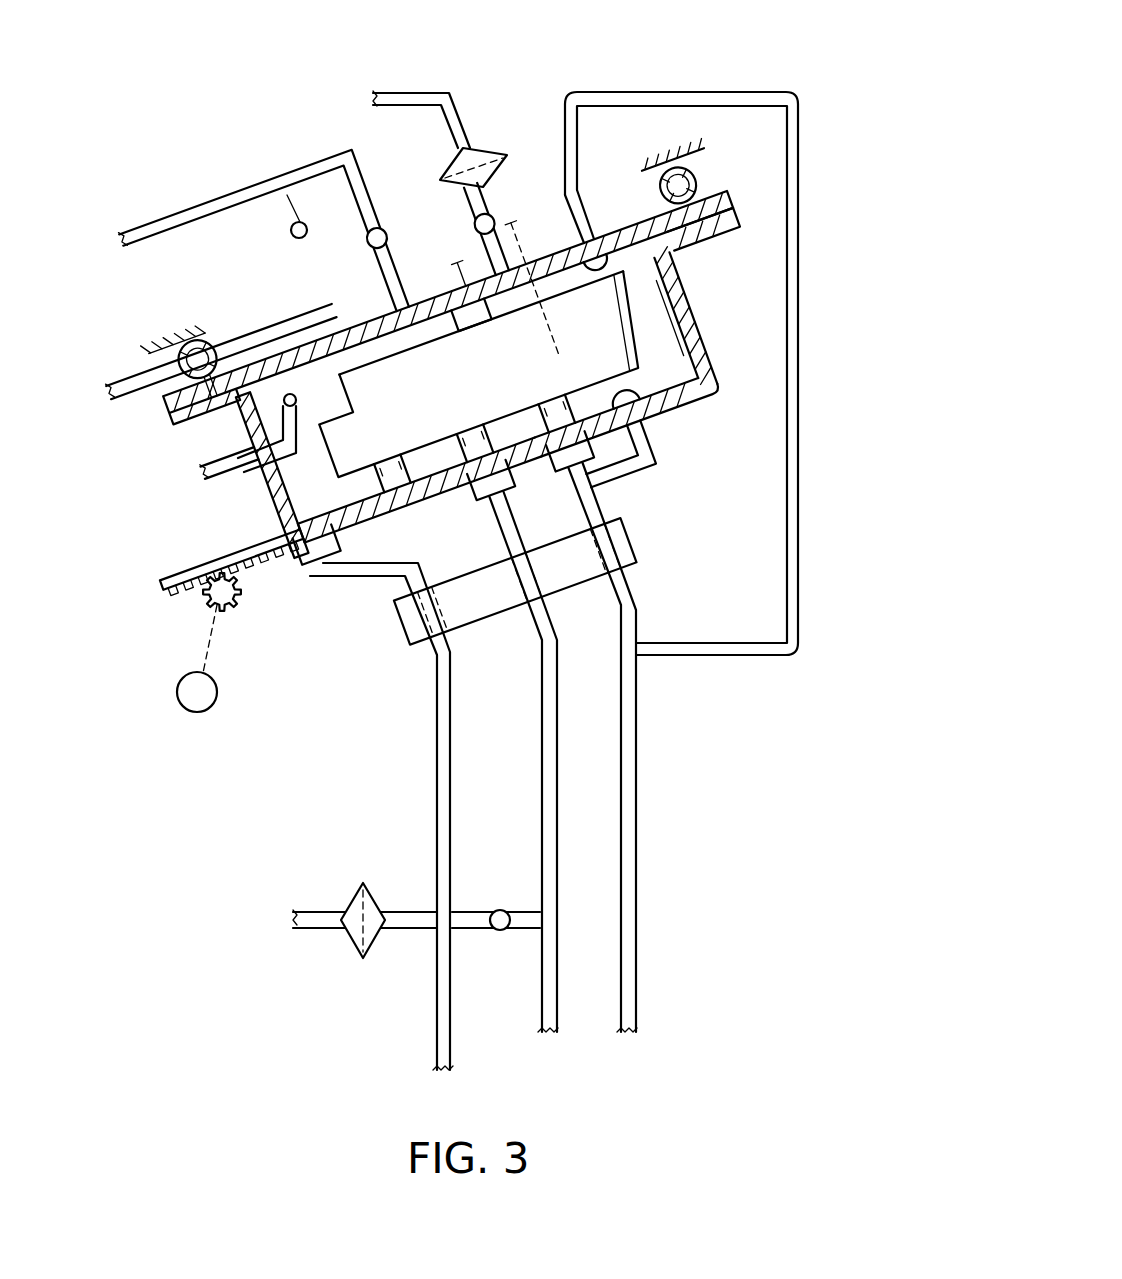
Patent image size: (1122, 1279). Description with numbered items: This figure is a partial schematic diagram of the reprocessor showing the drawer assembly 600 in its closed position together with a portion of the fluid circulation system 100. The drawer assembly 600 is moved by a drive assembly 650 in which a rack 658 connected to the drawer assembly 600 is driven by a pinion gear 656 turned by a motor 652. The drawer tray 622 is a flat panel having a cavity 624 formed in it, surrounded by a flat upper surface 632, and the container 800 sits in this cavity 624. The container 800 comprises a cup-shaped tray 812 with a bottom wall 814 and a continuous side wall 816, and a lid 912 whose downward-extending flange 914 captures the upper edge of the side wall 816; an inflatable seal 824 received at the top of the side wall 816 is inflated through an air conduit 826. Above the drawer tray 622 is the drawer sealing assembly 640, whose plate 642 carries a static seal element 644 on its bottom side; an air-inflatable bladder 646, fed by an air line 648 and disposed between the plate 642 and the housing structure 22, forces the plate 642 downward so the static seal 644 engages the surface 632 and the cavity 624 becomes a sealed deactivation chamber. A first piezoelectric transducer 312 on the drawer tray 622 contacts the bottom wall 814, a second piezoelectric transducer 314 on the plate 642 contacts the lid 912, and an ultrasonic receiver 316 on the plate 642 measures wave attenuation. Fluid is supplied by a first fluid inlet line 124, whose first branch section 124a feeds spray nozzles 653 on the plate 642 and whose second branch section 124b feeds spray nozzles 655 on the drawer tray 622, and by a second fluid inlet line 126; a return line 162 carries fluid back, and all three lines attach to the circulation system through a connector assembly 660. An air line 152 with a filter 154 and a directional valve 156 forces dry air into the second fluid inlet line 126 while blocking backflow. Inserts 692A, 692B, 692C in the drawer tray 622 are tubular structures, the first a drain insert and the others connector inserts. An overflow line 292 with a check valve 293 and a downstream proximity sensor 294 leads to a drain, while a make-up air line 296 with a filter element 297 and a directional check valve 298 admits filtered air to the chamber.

The housing structure 22 is at (672, 158).
The fluid circulation system 100 is at (312, 1040).
The first fluid inlet line 124 is at (637, 780).
The first branch section 124a is at (562, 130).
The second branch section 124b is at (615, 465).
The second fluid inlet line 126 is at (542, 797).
The air line 152 is at (407, 932).
The filter 154 is at (350, 940).
The directional valve 156 is at (498, 935).
The return line 162 is at (436, 748).
The overflow line 292 is at (247, 188).
The check valve 293 is at (387, 227).
The proximity sensor 294 is at (290, 232).
The make-up air line 296 is at (428, 91).
The filter element 297 is at (478, 150).
The directional check valve 298 is at (475, 222).
The first piezoelectric transducer 312 is at (425, 500).
The second piezoelectric transducer 314 is at (477, 312).
The ultrasonic receiver 316 is at (548, 293).
The drawer assembly 600 is at (273, 522).
The drawer tray 622 is at (700, 323).
The cavity 624 is at (688, 378).
The flat upper surface 632 is at (642, 213).
The drawer sealing assembly 640 is at (137, 363).
The plate 642 is at (318, 330).
The static seal element 644 is at (673, 217).
The air-inflatable bladder 646 is at (697, 177).
The air line 648 is at (137, 387).
The drive assembly 650 is at (162, 667).
The motor 652 is at (207, 710).
The spray nozzles 653 is at (607, 253).
The spray nozzles 655 is at (635, 413).
The pinion gear 656 is at (237, 603).
The rack 658 is at (187, 592).
The connector assembly 660 is at (643, 547).
The drain insert 692A is at (313, 557).
The connector insert 692B is at (482, 497).
The connector insert 692C is at (563, 470).
The container 800 is at (630, 313).
The tray 812 is at (647, 352).
The bottom wall 814 is at (430, 450).
The side wall 816 is at (268, 470).
The seal 824 is at (289, 393).
The air conduit 826 is at (248, 458).
The lid 912 is at (380, 360).
The downward-extending flange 914 is at (595, 300).